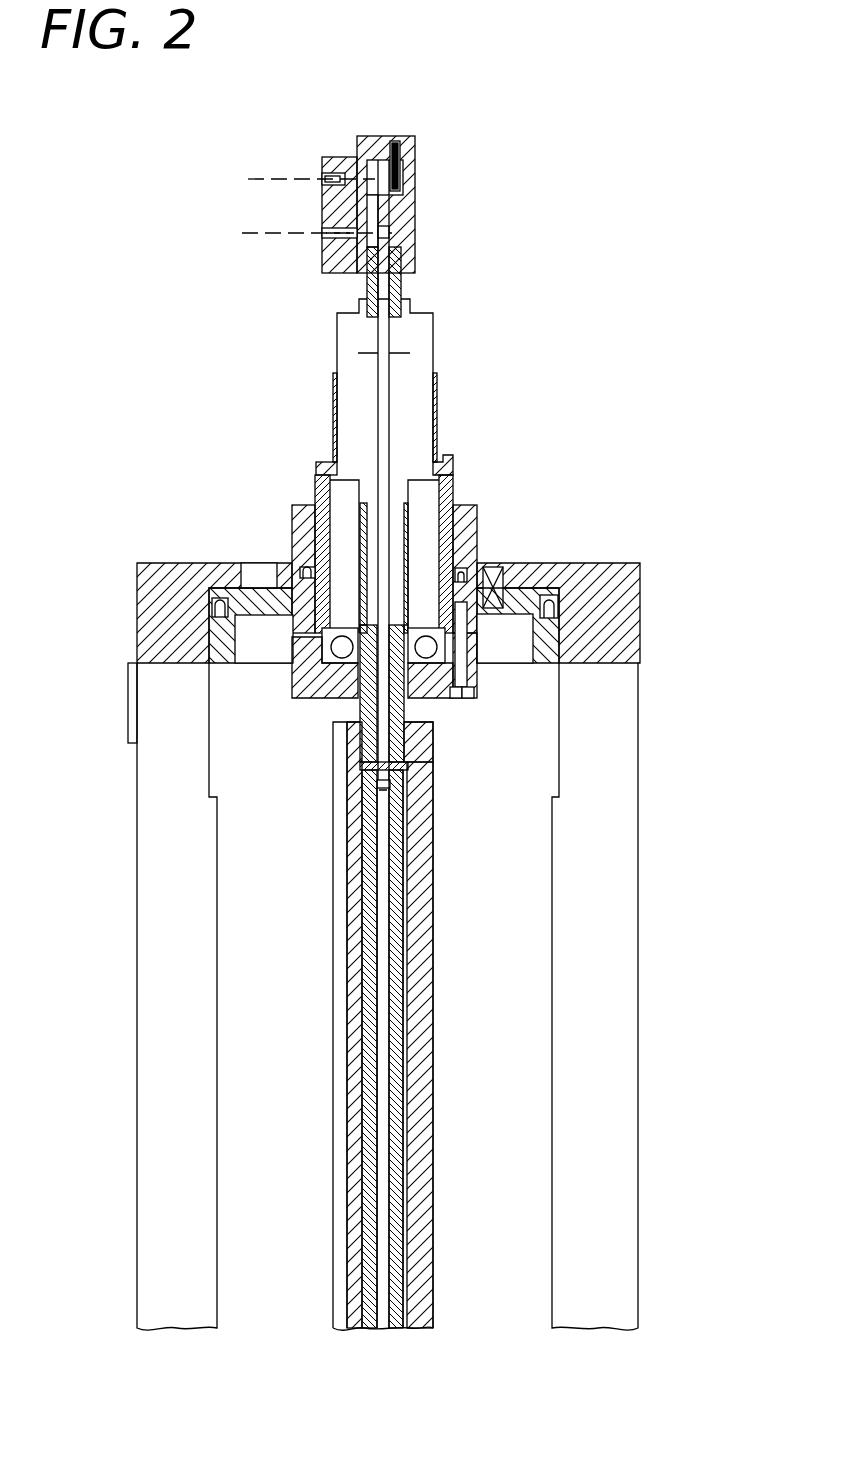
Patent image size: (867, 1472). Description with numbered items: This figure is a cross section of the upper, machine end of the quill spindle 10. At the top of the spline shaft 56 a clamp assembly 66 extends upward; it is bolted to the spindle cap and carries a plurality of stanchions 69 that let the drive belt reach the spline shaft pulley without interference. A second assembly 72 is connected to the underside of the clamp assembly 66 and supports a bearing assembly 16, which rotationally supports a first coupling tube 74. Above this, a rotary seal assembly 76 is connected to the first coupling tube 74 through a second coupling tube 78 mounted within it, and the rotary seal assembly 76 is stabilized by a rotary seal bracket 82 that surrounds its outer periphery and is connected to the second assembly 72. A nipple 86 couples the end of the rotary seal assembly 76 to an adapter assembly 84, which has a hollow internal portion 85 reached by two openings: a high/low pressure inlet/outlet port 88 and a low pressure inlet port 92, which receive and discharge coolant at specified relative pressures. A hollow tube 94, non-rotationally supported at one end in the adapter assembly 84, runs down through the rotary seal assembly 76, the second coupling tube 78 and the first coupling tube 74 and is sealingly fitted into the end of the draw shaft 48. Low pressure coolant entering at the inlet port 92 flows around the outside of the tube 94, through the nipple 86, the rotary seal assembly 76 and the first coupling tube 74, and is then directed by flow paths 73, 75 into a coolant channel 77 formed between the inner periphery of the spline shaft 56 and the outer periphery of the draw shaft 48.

The quill spindle 10 is at (719, 394).
The bearing assembly 16 is at (293, 650).
The draw shaft 48 is at (400, 985).
The spline shaft 56 is at (432, 1133).
The clamp assembly 66 is at (637, 582).
The stanchions 69 is at (137, 923).
The second assembly 72 is at (552, 632).
The flow path 73 is at (410, 763).
The first coupling tube 74 is at (412, 737).
The flow path 75 is at (360, 763).
The rotary seal assembly 76 is at (425, 325).
The coolant channel 77 is at (412, 875).
The second coupling tube 78 is at (410, 527).
The rotary seal bracket 82 is at (437, 382).
The adapter assembly 84 is at (415, 173).
The hollow internal portion 85 is at (378, 160).
The nipple 86 is at (365, 286).
The high/low pressure inlet/outlet port 88 is at (247, 179).
The low pressure inlet port 92 is at (243, 233).
The hollow tube 94 is at (388, 232).